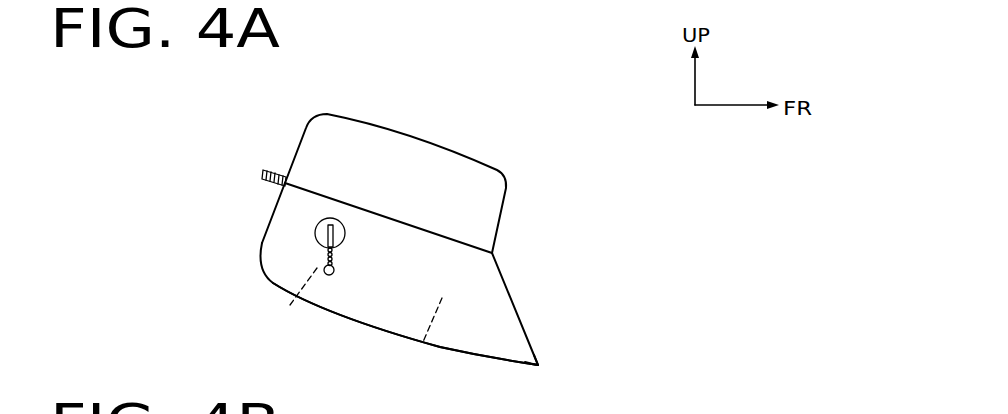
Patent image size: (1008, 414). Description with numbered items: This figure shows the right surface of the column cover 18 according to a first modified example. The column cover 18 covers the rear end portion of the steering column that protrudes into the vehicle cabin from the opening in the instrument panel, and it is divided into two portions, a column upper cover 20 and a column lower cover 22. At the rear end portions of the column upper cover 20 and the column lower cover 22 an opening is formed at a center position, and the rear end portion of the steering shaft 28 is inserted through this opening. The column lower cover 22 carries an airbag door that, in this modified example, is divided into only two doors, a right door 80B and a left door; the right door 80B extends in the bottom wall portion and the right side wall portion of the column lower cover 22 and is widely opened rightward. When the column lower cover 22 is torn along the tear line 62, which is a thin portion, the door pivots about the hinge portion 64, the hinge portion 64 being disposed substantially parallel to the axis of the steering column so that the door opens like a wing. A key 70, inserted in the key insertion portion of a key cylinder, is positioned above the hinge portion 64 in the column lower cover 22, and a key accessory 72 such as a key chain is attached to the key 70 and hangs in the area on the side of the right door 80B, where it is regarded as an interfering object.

The column cover 18 is at (421, 232).
The column upper cover 20 is at (432, 143).
The column lower cover 22 is at (503, 363).
The steering shaft 28 is at (263, 178).
The tear line 62 is at (290, 305).
The hinge portion 64 is at (398, 290).
The key 70 is at (327, 235).
The key accessory 72 is at (328, 276).
The right door 80B is at (368, 310).